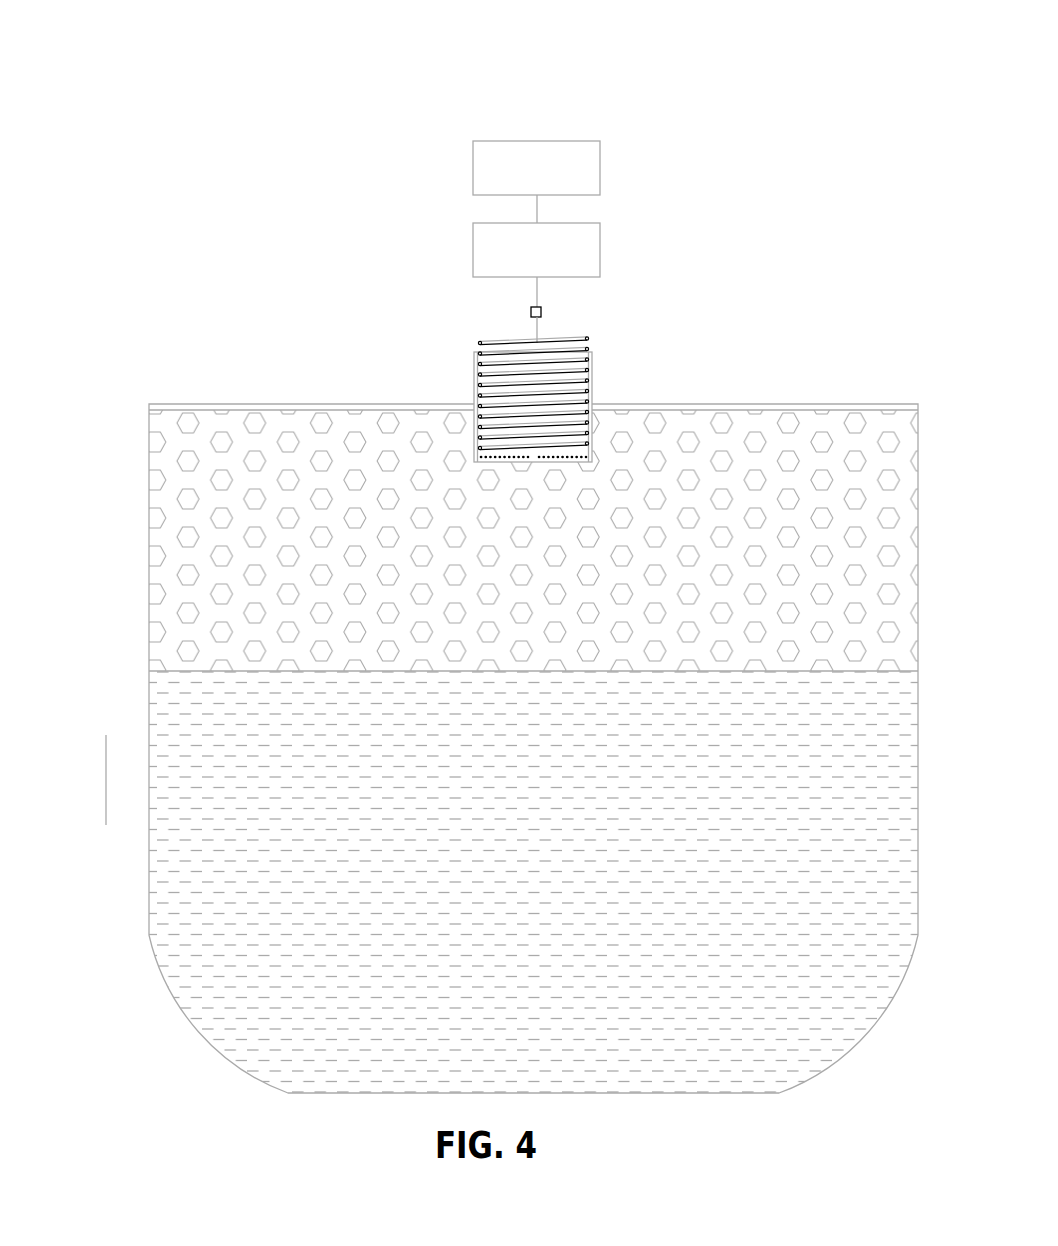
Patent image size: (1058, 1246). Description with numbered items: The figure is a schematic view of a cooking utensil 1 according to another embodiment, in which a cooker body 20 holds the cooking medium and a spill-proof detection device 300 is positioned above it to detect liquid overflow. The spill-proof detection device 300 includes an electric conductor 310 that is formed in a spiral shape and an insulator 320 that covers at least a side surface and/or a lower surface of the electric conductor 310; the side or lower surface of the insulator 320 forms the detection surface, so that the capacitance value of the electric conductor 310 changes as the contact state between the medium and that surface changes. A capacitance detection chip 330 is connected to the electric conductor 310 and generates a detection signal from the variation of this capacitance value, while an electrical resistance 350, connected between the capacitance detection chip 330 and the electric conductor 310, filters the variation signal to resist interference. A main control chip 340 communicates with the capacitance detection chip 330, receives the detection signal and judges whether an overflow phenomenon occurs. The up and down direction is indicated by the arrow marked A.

The cooking utensil 1 is at (547, 90).
The cooker body 20 is at (150, 927).
The spill-proof detection device 300 is at (621, 301).
The electric conductor 310 is at (550, 347).
The insulator 320 is at (597, 370).
The capacitance detection chip 330 is at (537, 257).
The main control chip 340 is at (545, 168).
The electrical resistance 350 is at (541, 307).